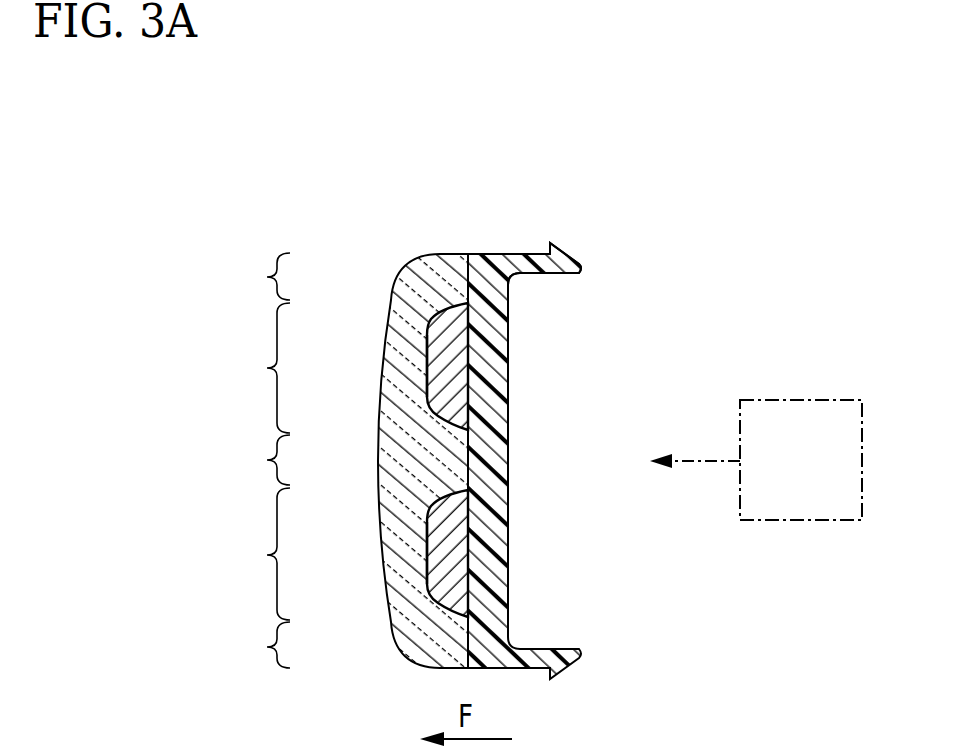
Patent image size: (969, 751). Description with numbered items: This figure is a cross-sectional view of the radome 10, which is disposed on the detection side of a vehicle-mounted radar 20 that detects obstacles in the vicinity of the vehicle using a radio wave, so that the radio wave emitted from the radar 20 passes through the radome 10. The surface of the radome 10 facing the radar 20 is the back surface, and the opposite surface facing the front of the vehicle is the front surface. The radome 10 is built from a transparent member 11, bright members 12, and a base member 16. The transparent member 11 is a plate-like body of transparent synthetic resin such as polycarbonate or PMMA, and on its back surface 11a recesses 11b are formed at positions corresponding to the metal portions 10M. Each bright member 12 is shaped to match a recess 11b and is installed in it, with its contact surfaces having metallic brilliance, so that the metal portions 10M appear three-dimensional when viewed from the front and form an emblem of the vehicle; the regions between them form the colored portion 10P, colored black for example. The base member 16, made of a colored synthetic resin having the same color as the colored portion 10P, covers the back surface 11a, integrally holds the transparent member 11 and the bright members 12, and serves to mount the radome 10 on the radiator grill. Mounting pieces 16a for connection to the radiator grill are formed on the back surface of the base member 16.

The radome 10 is at (333, 164).
The colored portion 10P is at (252, 460).
The metal portions 10M is at (251, 461).
The transparent member 11 is at (403, 262).
The back surface 11a is at (474, 280).
The recesses 11b is at (432, 380).
The bright member 12 is at (455, 361).
The base member 16 is at (490, 462).
The mounting pieces 16a is at (582, 228).
The radar 20 is at (800, 400).